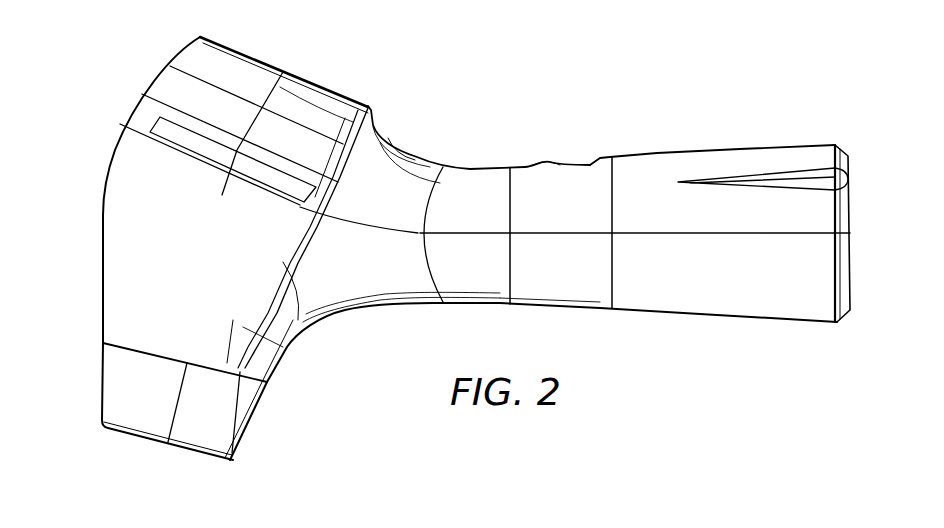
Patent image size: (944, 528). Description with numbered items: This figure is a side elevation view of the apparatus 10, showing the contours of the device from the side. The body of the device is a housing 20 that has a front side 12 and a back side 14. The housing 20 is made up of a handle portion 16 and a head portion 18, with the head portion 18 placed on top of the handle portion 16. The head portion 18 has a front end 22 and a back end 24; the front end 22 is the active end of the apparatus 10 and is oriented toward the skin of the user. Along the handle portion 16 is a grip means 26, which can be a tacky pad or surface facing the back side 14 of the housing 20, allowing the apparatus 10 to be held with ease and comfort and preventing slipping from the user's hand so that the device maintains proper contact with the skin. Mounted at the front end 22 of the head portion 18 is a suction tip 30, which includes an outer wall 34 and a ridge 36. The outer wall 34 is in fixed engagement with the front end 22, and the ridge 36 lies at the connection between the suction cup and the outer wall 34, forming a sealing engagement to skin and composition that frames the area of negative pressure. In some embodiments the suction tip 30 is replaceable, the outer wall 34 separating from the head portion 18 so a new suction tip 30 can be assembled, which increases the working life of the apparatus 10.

The apparatus 10 is at (420, 95).
The front side 12 is at (370, 309).
The back side 14 is at (652, 155).
The handle portion 16 is at (700, 312).
The head portion 18 is at (140, 108).
The housing 20 is at (810, 145).
The front end 22 is at (155, 293).
The back end 24 is at (272, 65).
The grip means 26 is at (540, 165).
The suction tip 30 is at (108, 362).
The outer wall 34 is at (110, 397).
The ridge 36 is at (153, 442).